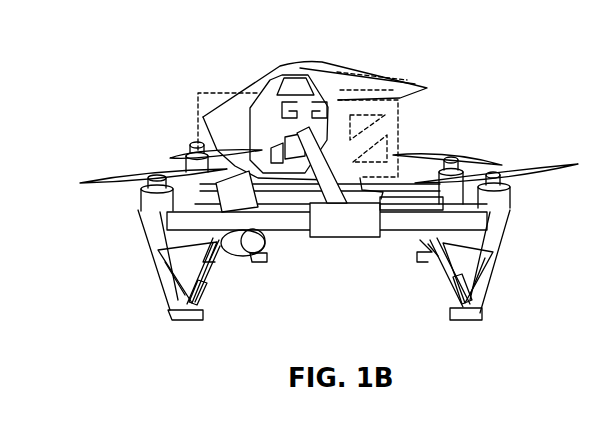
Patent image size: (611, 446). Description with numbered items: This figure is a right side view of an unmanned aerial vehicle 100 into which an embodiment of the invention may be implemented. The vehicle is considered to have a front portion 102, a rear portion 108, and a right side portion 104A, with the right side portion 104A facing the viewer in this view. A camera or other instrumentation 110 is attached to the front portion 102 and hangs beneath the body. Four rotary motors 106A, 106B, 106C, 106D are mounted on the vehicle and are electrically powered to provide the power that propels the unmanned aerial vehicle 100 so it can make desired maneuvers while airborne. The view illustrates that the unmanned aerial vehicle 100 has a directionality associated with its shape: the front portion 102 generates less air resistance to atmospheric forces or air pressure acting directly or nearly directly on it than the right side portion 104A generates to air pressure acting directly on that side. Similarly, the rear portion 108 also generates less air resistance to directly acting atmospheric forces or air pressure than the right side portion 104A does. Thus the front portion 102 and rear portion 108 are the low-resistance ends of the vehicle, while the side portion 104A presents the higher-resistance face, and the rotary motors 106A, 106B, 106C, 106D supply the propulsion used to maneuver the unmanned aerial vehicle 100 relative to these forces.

The unmanned aerial vehicle 100 is at (450, 44).
The front portion 102 is at (198, 117).
The right side portion 104A is at (270, 106).
The rotary motor 106A is at (158, 176).
The rotary motor 106B is at (495, 176).
The rotary motor 106C is at (194, 147).
The rotary motor 106D is at (450, 160).
The rear portion 108 is at (400, 127).
The camera or other instrumentation 110 is at (238, 263).